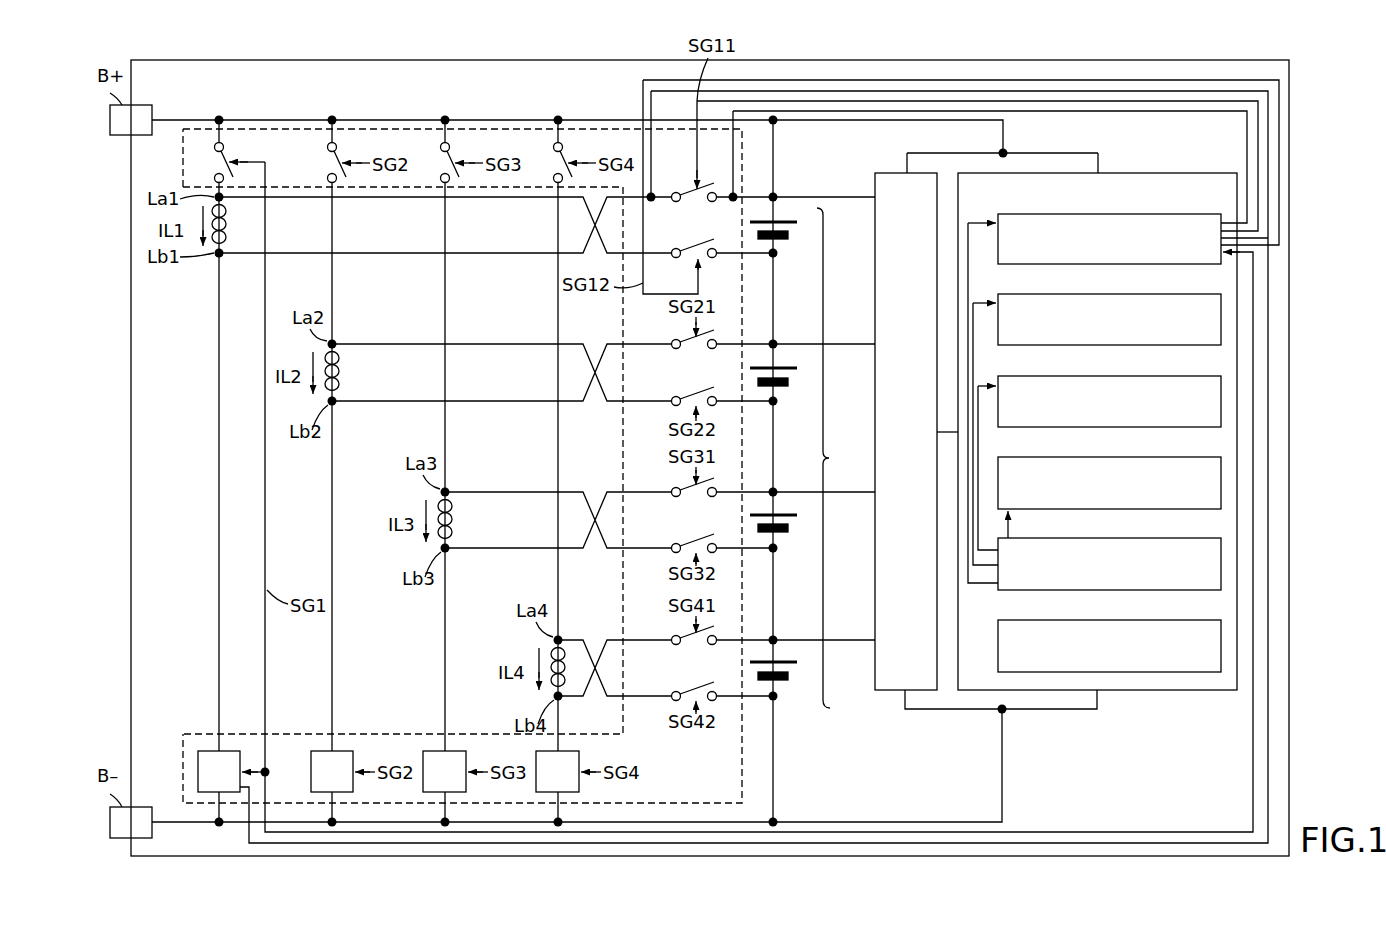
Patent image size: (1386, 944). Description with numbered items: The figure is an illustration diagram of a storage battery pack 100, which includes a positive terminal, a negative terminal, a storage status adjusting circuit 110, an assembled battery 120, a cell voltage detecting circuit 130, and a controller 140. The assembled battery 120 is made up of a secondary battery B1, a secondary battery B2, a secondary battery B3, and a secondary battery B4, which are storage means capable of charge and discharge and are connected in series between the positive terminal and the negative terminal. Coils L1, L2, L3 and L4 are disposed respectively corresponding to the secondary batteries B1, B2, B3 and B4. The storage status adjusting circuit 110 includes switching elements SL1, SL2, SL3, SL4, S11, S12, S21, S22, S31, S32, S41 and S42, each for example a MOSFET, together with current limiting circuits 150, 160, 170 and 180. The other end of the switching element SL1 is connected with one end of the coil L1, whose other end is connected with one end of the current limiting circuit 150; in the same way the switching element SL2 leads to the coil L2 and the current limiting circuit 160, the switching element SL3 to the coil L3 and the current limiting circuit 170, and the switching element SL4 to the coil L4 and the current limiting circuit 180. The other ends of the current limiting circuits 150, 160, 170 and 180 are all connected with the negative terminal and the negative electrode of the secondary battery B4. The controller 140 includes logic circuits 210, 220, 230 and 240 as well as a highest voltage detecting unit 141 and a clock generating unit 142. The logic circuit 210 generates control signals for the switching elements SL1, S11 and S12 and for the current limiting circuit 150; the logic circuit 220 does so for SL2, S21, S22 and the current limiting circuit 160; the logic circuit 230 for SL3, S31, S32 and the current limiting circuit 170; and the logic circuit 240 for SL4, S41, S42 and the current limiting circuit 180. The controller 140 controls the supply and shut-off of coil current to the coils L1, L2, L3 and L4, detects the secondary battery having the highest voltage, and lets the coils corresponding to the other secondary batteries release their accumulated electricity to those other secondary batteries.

The storage battery pack 100 is at (1205, 62).
The storage status adjusting circuit 110 is at (300, 129).
The assembled battery 120 is at (843, 458).
The cell voltage detecting circuit 130 is at (890, 173).
The controller 140 is at (1205, 173).
The highest voltage detecting unit 141 is at (1172, 621).
The clock generating unit 142 is at (1172, 539).
The current limiting circuit 150 is at (203, 751).
The current limiting circuit 160 is at (353, 754).
The current limiting circuit 170 is at (466, 754).
The current limiting circuit 180 is at (579, 754).
The logic circuit 210 is at (1172, 215).
The logic circuit 220 is at (1172, 296).
The logic circuit 230 is at (1172, 377).
The logic circuit 240 is at (1172, 459).
The coil L1 is at (230, 225).
The coil L2 is at (344, 373).
The coil L3 is at (457, 520).
The coil L4 is at (570, 668).
The switching element SL1 is at (228, 152).
The switching element SL2 is at (341, 152).
The switching element SL3 is at (454, 152).
The switching element SL4 is at (567, 152).
The switching element S11 is at (698, 190).
The switching element S12 is at (698, 244).
The switching element S21 is at (688, 338).
The switching element S22 is at (688, 395).
The switching element S31 is at (688, 486).
The switching element S32 is at (688, 543).
The switching element S41 is at (688, 633).
The switching element S42 is at (688, 688).
The secondary battery B1 is at (784, 225).
The secondary battery B2 is at (784, 373).
The secondary battery B3 is at (784, 520).
The secondary battery B4 is at (784, 668).